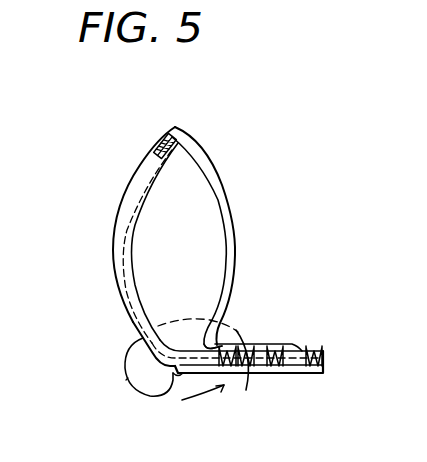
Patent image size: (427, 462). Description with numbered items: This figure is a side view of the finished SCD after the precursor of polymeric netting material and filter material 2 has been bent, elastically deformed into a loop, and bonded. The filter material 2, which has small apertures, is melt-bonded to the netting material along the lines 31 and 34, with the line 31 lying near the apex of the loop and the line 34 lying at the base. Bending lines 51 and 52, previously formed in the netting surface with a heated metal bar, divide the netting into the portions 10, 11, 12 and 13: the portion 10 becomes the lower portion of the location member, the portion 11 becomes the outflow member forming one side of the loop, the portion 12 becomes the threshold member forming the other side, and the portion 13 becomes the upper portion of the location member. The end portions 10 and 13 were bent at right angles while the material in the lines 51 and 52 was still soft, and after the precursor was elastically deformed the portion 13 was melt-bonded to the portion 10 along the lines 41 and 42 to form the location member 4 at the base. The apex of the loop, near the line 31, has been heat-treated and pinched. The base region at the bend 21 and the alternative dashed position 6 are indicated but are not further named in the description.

The filter material 2 is at (325, 352).
The location member 4 is at (222, 396).
The alternate position of roller 6 is at (128, 378).
The lower portion of the location member 10 is at (245, 377).
The outflow member 11 is at (115, 230).
The threshold member 12 is at (236, 210).
The upper portion of the location member 13 is at (300, 345).
The strap bend portion 21 is at (128, 312).
The melt-bonding line 31 is at (171, 128).
The melt-bonding line 34 is at (299, 374).
The melt-bonding line 41 is at (323, 367).
The melt-bonding line 42 is at (205, 380).
The bending line 51 is at (163, 393).
The bending line 52 is at (228, 333).